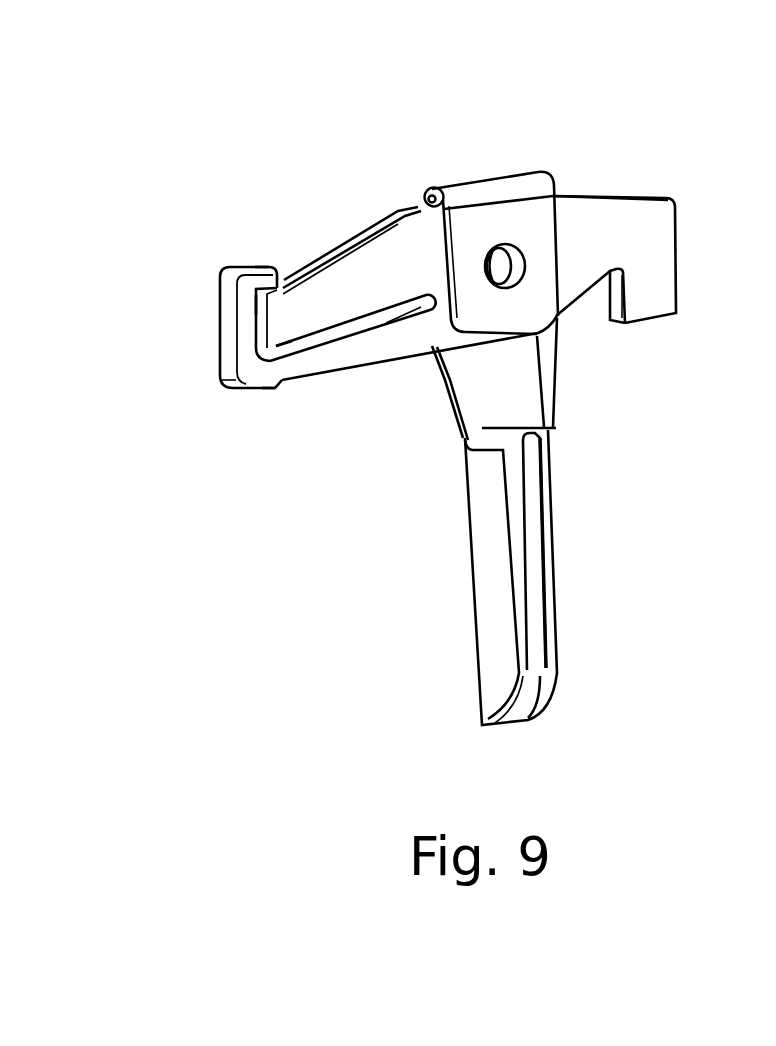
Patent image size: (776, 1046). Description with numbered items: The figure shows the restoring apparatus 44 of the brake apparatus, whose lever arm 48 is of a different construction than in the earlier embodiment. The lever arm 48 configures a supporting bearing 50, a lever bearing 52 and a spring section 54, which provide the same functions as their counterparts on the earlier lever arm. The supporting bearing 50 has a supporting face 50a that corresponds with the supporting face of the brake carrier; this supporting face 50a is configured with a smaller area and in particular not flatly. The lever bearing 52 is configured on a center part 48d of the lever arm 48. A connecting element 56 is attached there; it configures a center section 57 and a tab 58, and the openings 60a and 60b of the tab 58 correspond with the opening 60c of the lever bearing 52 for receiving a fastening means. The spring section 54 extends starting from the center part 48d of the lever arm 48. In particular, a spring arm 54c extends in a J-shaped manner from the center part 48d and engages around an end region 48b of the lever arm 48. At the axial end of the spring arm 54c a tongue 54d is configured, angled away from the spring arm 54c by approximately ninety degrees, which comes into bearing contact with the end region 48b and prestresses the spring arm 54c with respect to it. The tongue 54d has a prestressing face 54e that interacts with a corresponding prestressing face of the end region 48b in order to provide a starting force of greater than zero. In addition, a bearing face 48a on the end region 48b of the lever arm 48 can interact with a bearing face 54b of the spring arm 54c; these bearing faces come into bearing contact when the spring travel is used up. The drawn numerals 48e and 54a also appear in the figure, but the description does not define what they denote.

The restoring apparatus 44 is at (590, 150).
The lever arm 48 is at (628, 182).
The bearing face 48a is at (277, 350).
The end region 48b is at (294, 300).
The center part 48d is at (447, 340).
The tongue 48e is at (267, 305).
The supporting bearing 50 is at (653, 258).
The supporting face 50a is at (657, 323).
The lever bearing 52 is at (560, 315).
The spring section 54 is at (314, 413).
The block bottom 54a is at (262, 390).
The bearing face 54b is at (290, 347).
The spring arm 54c is at (330, 357).
The tongue 54d is at (265, 277).
The prestressing face 54e is at (262, 305).
The connecting element 56 is at (452, 455).
The center section 57 is at (424, 201).
The tab 58 is at (538, 225).
The opening 60a is at (502, 245).
The opening 60b is at (489, 263).
The opening 60c is at (503, 262).